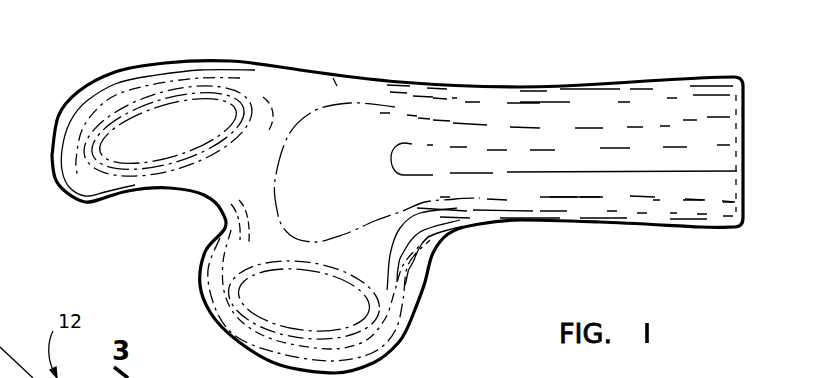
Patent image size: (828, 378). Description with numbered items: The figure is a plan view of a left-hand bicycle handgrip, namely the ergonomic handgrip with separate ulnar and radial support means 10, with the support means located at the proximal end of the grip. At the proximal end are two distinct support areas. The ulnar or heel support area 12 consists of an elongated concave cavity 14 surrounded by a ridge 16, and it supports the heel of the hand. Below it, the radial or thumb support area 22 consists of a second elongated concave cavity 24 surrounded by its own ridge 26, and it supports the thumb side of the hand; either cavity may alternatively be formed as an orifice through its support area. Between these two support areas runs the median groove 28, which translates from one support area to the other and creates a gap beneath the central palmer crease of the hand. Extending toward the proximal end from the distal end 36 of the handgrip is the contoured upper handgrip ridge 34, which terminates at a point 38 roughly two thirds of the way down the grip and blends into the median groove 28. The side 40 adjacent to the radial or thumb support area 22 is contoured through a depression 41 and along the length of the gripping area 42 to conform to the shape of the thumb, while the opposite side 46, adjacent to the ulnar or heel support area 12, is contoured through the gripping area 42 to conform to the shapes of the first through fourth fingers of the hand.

The ergonomic handgrip with separate ulnar and radial support means 10 is at (76, 84).
The ulnar or heel support area 12 is at (54, 130).
The elongated concave cavity 14 is at (173, 143).
The ridge 16 is at (122, 96).
The radial or thumb support area 22 is at (202, 322).
The second elongated concave cavity 24 is at (312, 321).
The ridge 26 is at (362, 345).
The median groove 28 is at (221, 212).
The contoured upper handgrip ridge 34 is at (632, 168).
The distal end 36 is at (745, 130).
The point 38 is at (393, 160).
The side 40 is at (555, 212).
The depression 41 is at (412, 235).
The gripping area 42 is at (660, 108).
The side 46 is at (516, 82).